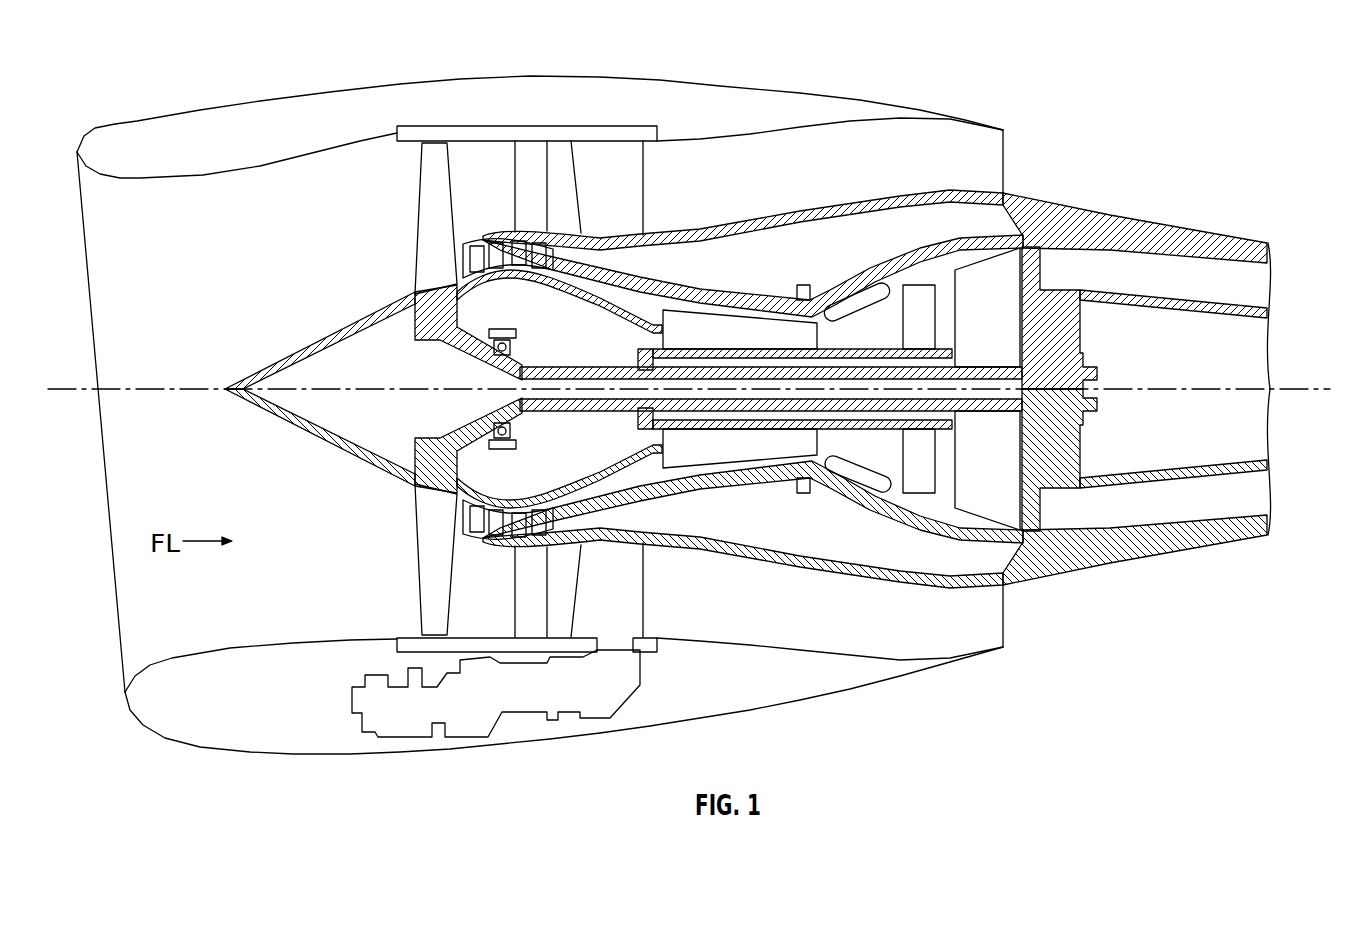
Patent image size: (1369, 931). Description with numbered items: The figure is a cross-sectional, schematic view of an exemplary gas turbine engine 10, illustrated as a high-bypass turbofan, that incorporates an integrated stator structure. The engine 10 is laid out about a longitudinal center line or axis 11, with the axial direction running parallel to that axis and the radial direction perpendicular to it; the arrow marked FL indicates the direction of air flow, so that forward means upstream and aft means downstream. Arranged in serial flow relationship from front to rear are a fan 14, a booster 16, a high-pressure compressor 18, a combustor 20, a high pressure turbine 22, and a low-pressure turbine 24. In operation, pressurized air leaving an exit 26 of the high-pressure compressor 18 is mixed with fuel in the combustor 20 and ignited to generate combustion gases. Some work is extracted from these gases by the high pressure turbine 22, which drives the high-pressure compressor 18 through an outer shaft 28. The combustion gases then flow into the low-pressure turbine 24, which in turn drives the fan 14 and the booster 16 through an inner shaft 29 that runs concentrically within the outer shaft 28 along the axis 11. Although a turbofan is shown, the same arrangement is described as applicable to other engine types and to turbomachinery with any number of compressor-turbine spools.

The gas turbine engine 10 is at (1040, 92).
The longitudinal center line or axis 11 is at (1298, 388).
The fan 14 is at (447, 247).
The booster 16 is at (505, 253).
The high-pressure compressor 18 is at (748, 348).
The combustor 20 is at (840, 318).
The high pressure turbine 22 is at (932, 328).
The low-pressure turbine 24 is at (1002, 328).
The exit of the compressor 26 is at (817, 438).
The outer shaft 28 is at (648, 420).
The inner shaft 29 is at (618, 373).